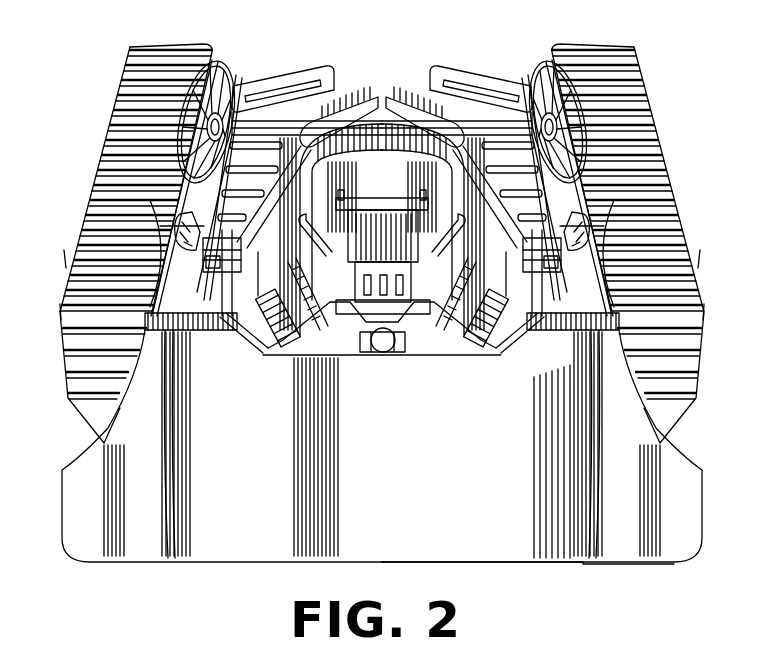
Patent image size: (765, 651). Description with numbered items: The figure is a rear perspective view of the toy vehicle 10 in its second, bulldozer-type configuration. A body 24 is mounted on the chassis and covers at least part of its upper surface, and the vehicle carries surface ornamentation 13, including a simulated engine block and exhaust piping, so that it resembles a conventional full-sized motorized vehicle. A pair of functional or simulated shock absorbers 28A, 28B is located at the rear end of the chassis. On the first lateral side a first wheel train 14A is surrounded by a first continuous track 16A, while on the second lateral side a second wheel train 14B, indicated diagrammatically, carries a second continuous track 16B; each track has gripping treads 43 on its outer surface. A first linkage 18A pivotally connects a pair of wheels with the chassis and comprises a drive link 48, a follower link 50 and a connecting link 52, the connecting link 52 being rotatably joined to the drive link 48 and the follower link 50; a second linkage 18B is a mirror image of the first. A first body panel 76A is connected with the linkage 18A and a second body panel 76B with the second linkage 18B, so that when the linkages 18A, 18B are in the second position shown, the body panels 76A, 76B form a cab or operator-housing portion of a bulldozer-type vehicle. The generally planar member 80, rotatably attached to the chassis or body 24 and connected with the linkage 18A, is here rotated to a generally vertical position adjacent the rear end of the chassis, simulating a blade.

The toy vehicle 10 is at (110, 54).
The surface ornamentation 13 is at (404, 232).
The first wheel train 14A is at (230, 57).
The second wheel train 14B is at (533, 57).
The first continuous track 16A is at (112, 85).
The second continuous track 16B is at (640, 85).
The first linkage 18A is at (200, 190).
The second linkage 18B is at (548, 166).
The body 24 is at (396, 188).
The shock absorber 28A is at (258, 330).
The shock absorber 28B is at (507, 330).
The gripping treads 43 is at (62, 310).
The drive link 48 is at (62, 257).
The follower link 50 is at (290, 70).
The connecting link 52 is at (215, 128).
The first body panel 76A is at (340, 98).
The second body panel 76B is at (420, 98).
The planar member 80 is at (450, 423).